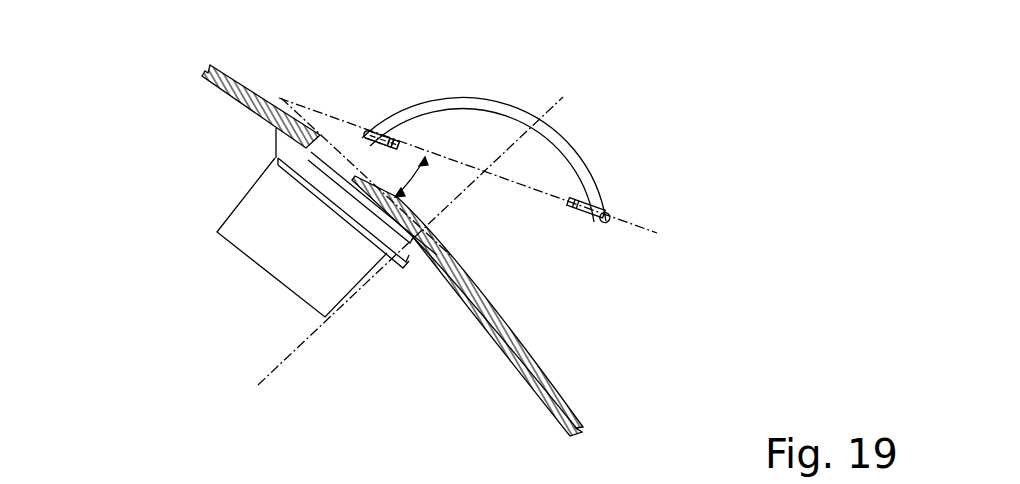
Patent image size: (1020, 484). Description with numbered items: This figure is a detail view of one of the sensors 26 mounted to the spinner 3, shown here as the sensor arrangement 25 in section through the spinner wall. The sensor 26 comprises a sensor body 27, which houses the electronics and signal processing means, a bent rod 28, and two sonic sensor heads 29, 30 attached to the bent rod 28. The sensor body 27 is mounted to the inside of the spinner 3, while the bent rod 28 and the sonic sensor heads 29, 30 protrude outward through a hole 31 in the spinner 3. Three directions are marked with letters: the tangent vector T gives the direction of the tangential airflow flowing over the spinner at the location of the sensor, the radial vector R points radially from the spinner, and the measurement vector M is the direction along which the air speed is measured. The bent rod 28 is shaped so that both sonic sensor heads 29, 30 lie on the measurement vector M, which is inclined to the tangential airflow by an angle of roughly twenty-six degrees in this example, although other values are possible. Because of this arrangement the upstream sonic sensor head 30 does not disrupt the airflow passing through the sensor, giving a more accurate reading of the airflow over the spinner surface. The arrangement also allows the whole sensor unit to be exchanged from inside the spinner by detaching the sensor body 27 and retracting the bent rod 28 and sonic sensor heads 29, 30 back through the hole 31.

The spinner 3 is at (548, 376).
The mounting arrangement 25 is at (115, 157).
The sensor 26 is at (607, 129).
The sensor body 27 is at (322, 263).
The bent rod 28 is at (463, 97).
The sonic sensor head 29 is at (388, 132).
The sonic sensor head 30 is at (580, 218).
The hole 31 is at (328, 147).
The tangent vector T is at (295, 97).
The measurement vector M is at (650, 222).
The radial vector R is at (550, 108).